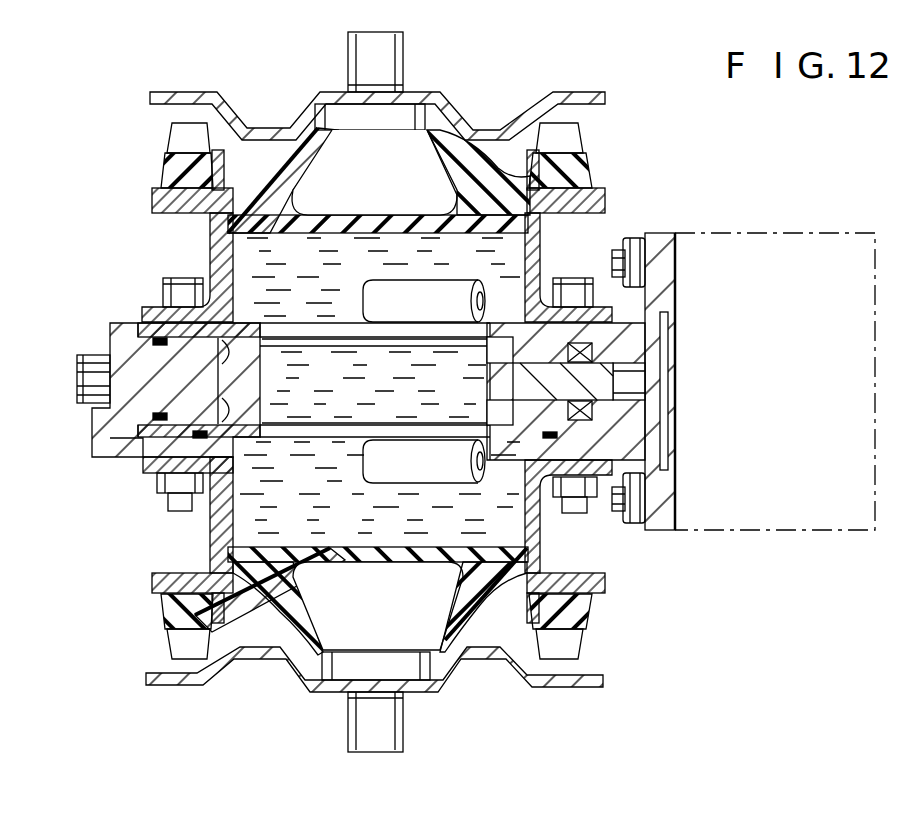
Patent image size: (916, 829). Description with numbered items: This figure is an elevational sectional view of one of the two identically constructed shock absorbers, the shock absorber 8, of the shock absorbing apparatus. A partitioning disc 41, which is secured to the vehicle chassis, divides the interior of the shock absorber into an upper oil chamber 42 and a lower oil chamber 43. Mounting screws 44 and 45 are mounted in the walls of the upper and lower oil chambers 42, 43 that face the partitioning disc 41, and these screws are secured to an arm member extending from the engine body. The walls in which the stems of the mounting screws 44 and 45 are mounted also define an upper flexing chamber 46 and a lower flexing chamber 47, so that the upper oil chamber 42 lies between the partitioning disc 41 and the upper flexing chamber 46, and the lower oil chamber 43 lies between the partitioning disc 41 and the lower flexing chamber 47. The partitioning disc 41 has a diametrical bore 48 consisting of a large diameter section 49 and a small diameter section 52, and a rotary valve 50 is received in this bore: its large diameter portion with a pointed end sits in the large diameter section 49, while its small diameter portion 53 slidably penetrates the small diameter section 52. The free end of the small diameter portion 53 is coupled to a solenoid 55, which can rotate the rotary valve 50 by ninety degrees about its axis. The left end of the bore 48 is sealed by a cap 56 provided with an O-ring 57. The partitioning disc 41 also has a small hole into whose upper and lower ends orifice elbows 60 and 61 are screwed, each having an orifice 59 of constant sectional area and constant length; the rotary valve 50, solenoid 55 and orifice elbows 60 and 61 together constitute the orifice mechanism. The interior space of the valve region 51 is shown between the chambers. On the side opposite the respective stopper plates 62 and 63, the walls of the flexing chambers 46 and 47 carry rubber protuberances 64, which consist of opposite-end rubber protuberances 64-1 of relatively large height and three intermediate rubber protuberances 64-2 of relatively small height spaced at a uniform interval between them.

The second shock absorber 8 is at (339, 384).
The partitioning disc 41 is at (247, 323).
The upper oil chamber 42 is at (214, 236).
The lower oil chamber 43 is at (232, 530).
The mounting screw 44 is at (405, 60).
The mounting screw 45 is at (405, 712).
The upper flexing chamber 46 is at (487, 183).
The lower flexing chamber 47 is at (476, 604).
The diametrical bore 48 is at (225, 352).
The large diameter section 49 is at (225, 410).
The rotary valve 50 is at (305, 346).
The chamber 51 is at (302, 407).
The small diameter section 52 is at (530, 370).
The small diameter portion 53 is at (547, 387).
The solenoid 55 is at (778, 233).
The cap 56 is at (108, 342).
The O-ring 57 is at (160, 414).
The orifice 59 is at (480, 298).
The orifice elbow 60 is at (406, 290).
The orifice elbow 61 is at (435, 472).
The stopper plate 62 is at (562, 93).
The stopper plate 63 is at (562, 688).
The rubber protuberances 64 is at (448, 391).
The opposite-end rubber protuberances 64-1 is at (583, 135).
The intermediate rubber protuberances 64-2 is at (587, 165).